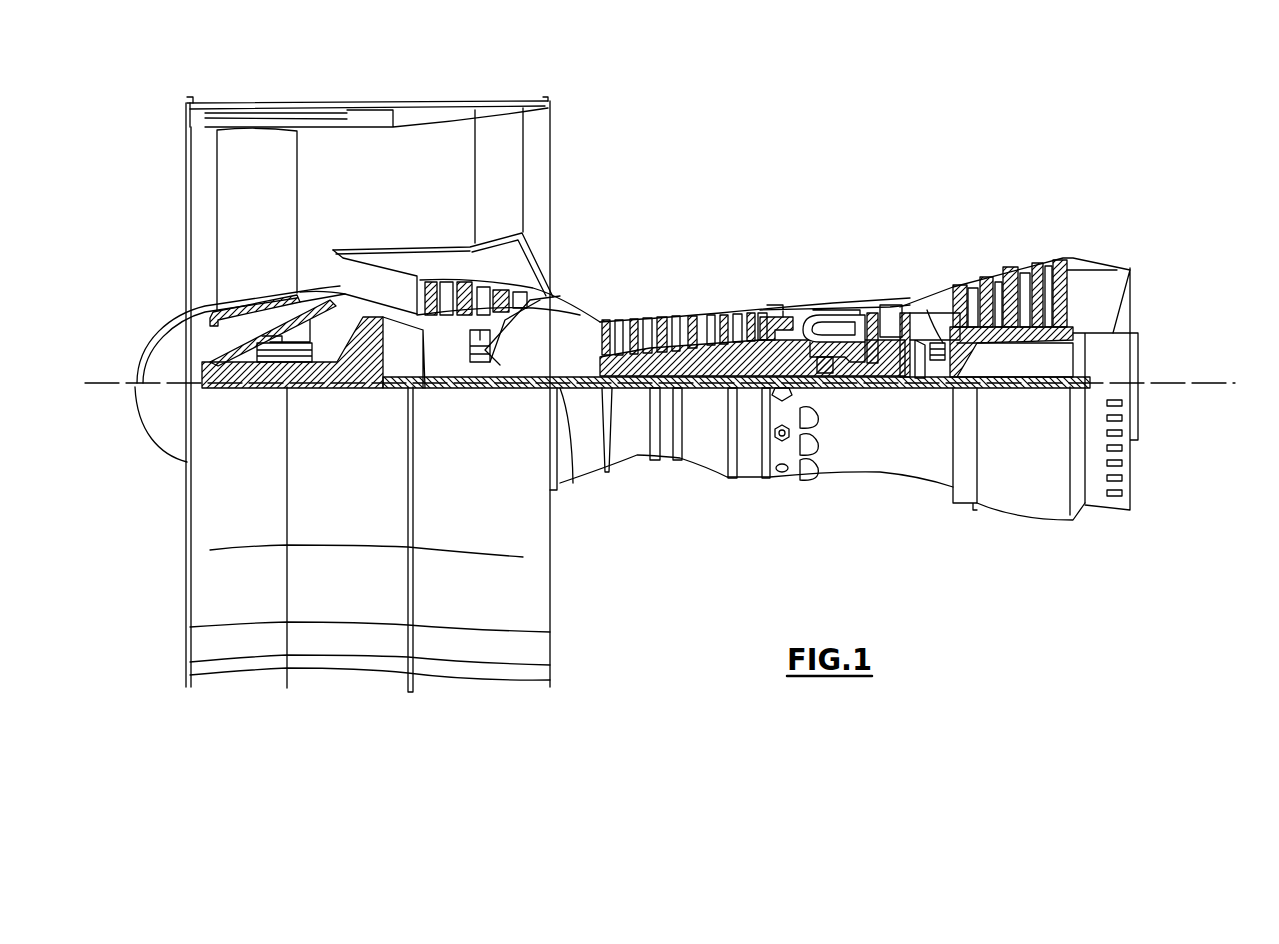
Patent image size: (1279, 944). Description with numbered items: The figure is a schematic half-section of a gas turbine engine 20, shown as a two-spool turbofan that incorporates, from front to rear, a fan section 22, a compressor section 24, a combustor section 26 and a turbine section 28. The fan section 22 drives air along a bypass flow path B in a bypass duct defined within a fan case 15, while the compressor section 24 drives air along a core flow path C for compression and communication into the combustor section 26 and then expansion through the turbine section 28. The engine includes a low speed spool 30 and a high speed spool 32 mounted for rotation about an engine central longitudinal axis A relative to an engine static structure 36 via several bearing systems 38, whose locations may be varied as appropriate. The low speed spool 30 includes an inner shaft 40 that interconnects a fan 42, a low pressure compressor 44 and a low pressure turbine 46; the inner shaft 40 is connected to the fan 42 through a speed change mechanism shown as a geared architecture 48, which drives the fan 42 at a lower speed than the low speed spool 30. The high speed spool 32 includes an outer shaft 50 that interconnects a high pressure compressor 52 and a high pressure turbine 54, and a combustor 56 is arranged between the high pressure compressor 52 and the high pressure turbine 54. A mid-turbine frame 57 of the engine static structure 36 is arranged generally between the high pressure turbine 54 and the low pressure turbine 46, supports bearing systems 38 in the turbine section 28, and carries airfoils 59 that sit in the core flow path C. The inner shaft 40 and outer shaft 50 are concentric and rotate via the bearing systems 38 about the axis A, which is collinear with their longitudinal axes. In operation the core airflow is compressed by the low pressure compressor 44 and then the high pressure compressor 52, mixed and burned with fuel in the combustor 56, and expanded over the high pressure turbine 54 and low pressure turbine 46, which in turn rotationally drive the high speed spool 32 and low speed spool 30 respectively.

The fan case 15 is at (368, 110).
The gas turbine engine 20 is at (832, 147).
The fan section 22 is at (367, 360).
The compressor section 24 is at (755, 308).
The combustor section 26 is at (835, 294).
The turbine section 28 is at (1009, 353).
The low speed spool 30 is at (706, 398).
The high speed spool 32 is at (748, 352).
The engine static structure 36 is at (747, 486).
The bearing systems 38 is at (508, 378).
The inner shaft 40 is at (562, 392).
The fan 42 is at (270, 233).
The low pressure compressor 44 is at (472, 300).
The low pressure turbine 46 is at (1018, 270).
The geared architecture 48 is at (375, 372).
The outer shaft 50 is at (836, 385).
The high pressure compressor 52 is at (680, 358).
The high pressure turbine 54 is at (890, 316).
The combustor 56 is at (826, 325).
The mid-turbine frame 57 is at (934, 298).
The airfoils 59 is at (957, 350).
The engine central longitudinal axis A is at (1214, 383).
The bypass flow path B is at (325, 178).
The core flow path C is at (368, 283).